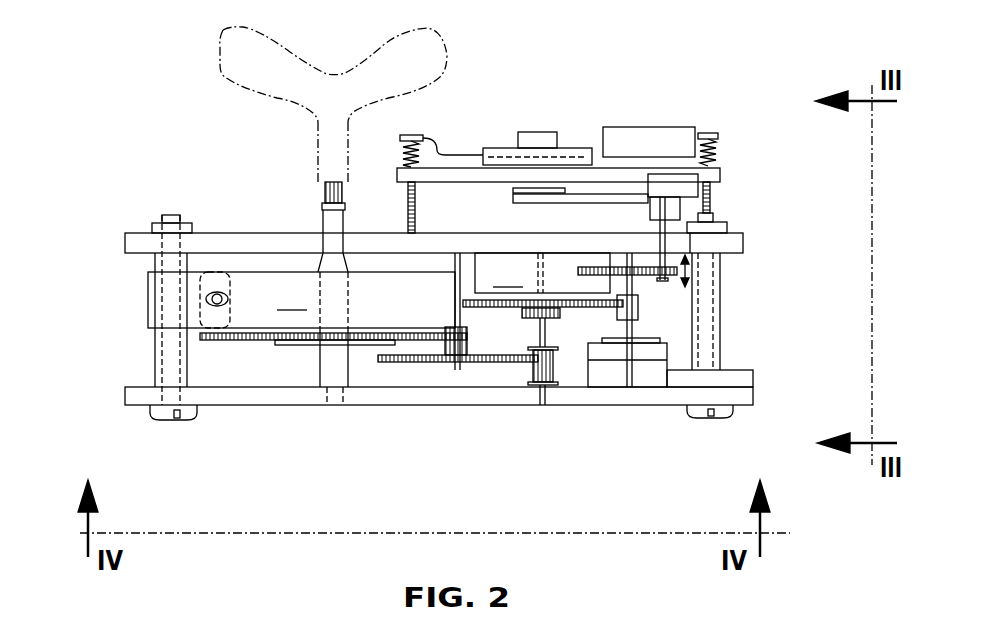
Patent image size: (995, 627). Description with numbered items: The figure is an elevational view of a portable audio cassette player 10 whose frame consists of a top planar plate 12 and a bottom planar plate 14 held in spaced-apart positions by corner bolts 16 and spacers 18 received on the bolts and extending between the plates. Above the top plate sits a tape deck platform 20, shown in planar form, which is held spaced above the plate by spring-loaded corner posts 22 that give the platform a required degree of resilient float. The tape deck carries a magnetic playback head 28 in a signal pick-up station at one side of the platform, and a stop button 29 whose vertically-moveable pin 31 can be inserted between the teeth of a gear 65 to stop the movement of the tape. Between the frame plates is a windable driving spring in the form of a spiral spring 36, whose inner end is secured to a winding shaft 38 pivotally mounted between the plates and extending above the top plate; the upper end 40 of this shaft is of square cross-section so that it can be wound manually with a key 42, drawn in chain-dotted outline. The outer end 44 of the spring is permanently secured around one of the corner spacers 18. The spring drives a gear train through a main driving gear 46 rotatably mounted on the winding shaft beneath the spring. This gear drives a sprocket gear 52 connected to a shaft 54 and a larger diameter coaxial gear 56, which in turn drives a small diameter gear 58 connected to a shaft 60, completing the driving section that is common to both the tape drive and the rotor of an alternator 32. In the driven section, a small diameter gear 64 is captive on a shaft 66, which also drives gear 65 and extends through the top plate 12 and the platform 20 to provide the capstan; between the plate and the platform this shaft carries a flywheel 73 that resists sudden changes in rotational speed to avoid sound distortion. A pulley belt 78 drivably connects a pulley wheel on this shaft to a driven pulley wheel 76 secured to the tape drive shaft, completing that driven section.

The portable audio cassette player 10 is at (185, 152).
The top planar plate 12 is at (128, 243).
The bottom planar plate 14 is at (127, 399).
The corner bolts 16 is at (160, 212).
The spacers 18 is at (155, 357).
The tape deck platform 20 is at (720, 175).
The spring-loaded corner posts 22 is at (410, 205).
The magnetic playback head 28 is at (540, 132).
The stop button 29 is at (693, 190).
The vertically-moveable pin 31 is at (720, 223).
The alternator 32 is at (542, 273).
The spiral spring 36 is at (368, 311).
The winding shaft 38 is at (360, 300).
The upper end of winding shaft 40 is at (323, 188).
The key 42 is at (223, 77).
The outer end of spring 44 is at (148, 300).
The main driving gear 46 is at (237, 345).
The sprocket gear 52 is at (474, 342).
The shaft 54 is at (463, 312).
The larger diameter coaxial gear 56 is at (404, 365).
The small diameter gear 58 is at (550, 387).
The shaft 60 is at (547, 333).
The small diameter gear 64 is at (638, 310).
The gear 65 is at (743, 243).
The shaft 66 is at (667, 358).
The flywheel 73 is at (702, 208).
The driven pulley wheel 76 is at (513, 190).
The pulley belt 78 is at (547, 201).